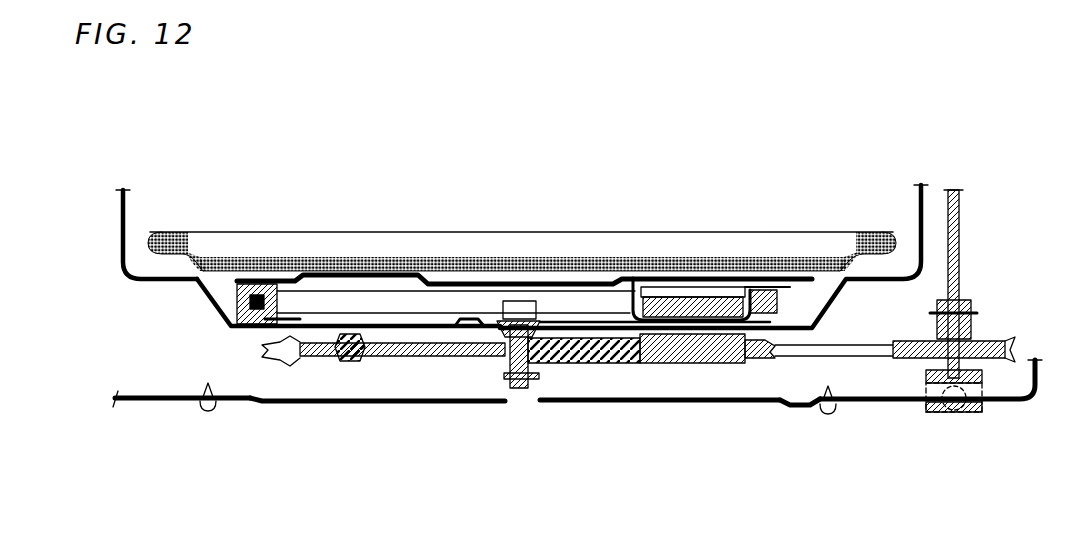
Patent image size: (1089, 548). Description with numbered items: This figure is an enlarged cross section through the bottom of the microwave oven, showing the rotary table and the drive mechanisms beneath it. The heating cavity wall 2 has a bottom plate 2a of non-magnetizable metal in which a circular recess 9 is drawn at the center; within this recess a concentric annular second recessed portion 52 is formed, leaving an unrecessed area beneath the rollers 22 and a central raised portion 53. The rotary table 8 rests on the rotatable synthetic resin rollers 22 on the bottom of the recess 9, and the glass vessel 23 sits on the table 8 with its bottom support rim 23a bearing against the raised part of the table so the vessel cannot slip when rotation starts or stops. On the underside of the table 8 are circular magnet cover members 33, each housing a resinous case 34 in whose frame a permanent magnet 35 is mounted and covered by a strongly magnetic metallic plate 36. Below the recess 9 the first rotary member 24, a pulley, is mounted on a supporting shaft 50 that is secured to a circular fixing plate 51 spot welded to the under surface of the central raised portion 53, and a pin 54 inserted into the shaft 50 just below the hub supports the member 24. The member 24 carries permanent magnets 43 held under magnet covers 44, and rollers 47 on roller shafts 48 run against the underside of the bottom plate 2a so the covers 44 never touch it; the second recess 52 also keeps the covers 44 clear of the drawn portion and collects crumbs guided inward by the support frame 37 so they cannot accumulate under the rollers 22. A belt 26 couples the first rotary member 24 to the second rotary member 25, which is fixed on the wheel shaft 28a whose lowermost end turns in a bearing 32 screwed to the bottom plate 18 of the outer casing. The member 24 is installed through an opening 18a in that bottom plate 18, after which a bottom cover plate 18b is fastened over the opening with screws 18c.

The heating cavity wall 2 is at (117, 212).
The bottom plate of the heating cavity 2a is at (863, 283).
The rotary table 8 is at (392, 233).
The circular recess 9 is at (212, 303).
The bottom plate of the outer casing 18 is at (903, 403).
The opening 18a is at (590, 383).
The bottom cover plate 18b is at (703, 403).
The screws 18c is at (210, 411).
The rollers 22 is at (247, 285).
The vessel 23 is at (347, 262).
The bottom support rim 23a is at (293, 280).
The first rotary member 24 is at (432, 352).
The second rotary member 25 is at (982, 342).
The belt 26 is at (870, 353).
The wheel shaft 28a is at (957, 222).
The bearing 32 is at (980, 378).
The magnet cover member 33 is at (638, 297).
The case 34 is at (660, 290).
The permanent magnet 35 is at (718, 290).
The strongly magnetic metallic plate 36 is at (775, 290).
The support frame 37 is at (525, 303).
The permanent magnet 43 is at (667, 352).
The magnet cover 44 is at (723, 345).
The roller 47 is at (347, 365).
The roller shaft 48 is at (327, 347).
The supporting shaft 50 is at (520, 390).
The circular fixing plate 51 is at (562, 365).
The second recessed portion 52 is at (305, 323).
The central raised portion 53 is at (560, 313).
The pin 54 is at (504, 377).